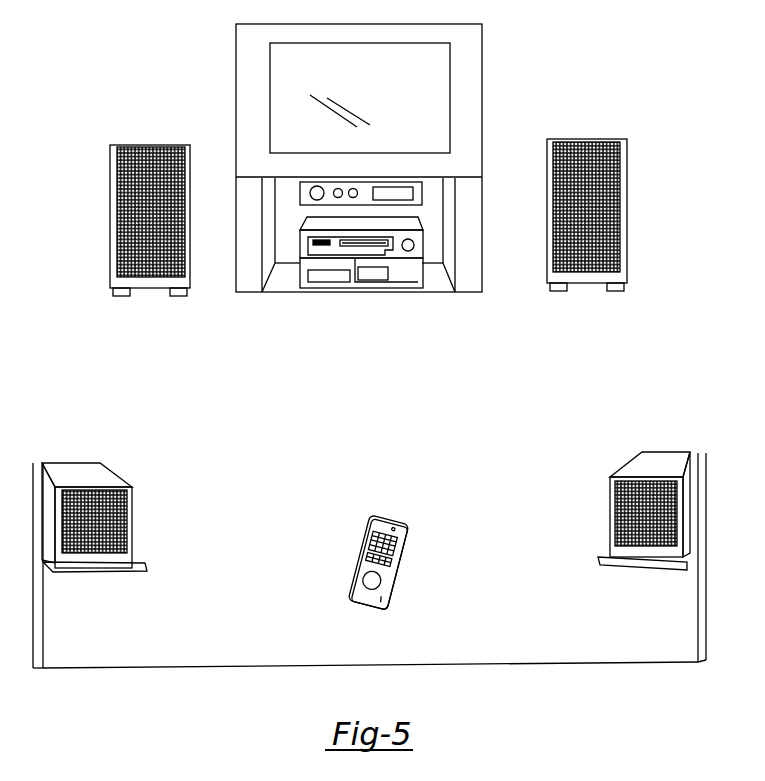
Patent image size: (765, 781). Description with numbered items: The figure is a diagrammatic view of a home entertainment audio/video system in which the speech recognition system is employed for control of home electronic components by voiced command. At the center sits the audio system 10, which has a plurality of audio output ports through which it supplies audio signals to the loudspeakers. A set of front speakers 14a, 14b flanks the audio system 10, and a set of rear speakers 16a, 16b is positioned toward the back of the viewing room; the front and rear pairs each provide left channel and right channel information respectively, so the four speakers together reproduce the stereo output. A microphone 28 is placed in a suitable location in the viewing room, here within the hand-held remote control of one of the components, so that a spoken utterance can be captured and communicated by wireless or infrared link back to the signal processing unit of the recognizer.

The audio system 10 is at (330, 286).
The front speaker 14a is at (109, 180).
The front speaker 14b is at (629, 172).
The rear speaker 16a is at (77, 470).
The rear speaker 16b is at (653, 459).
The microphone 28 is at (363, 600).